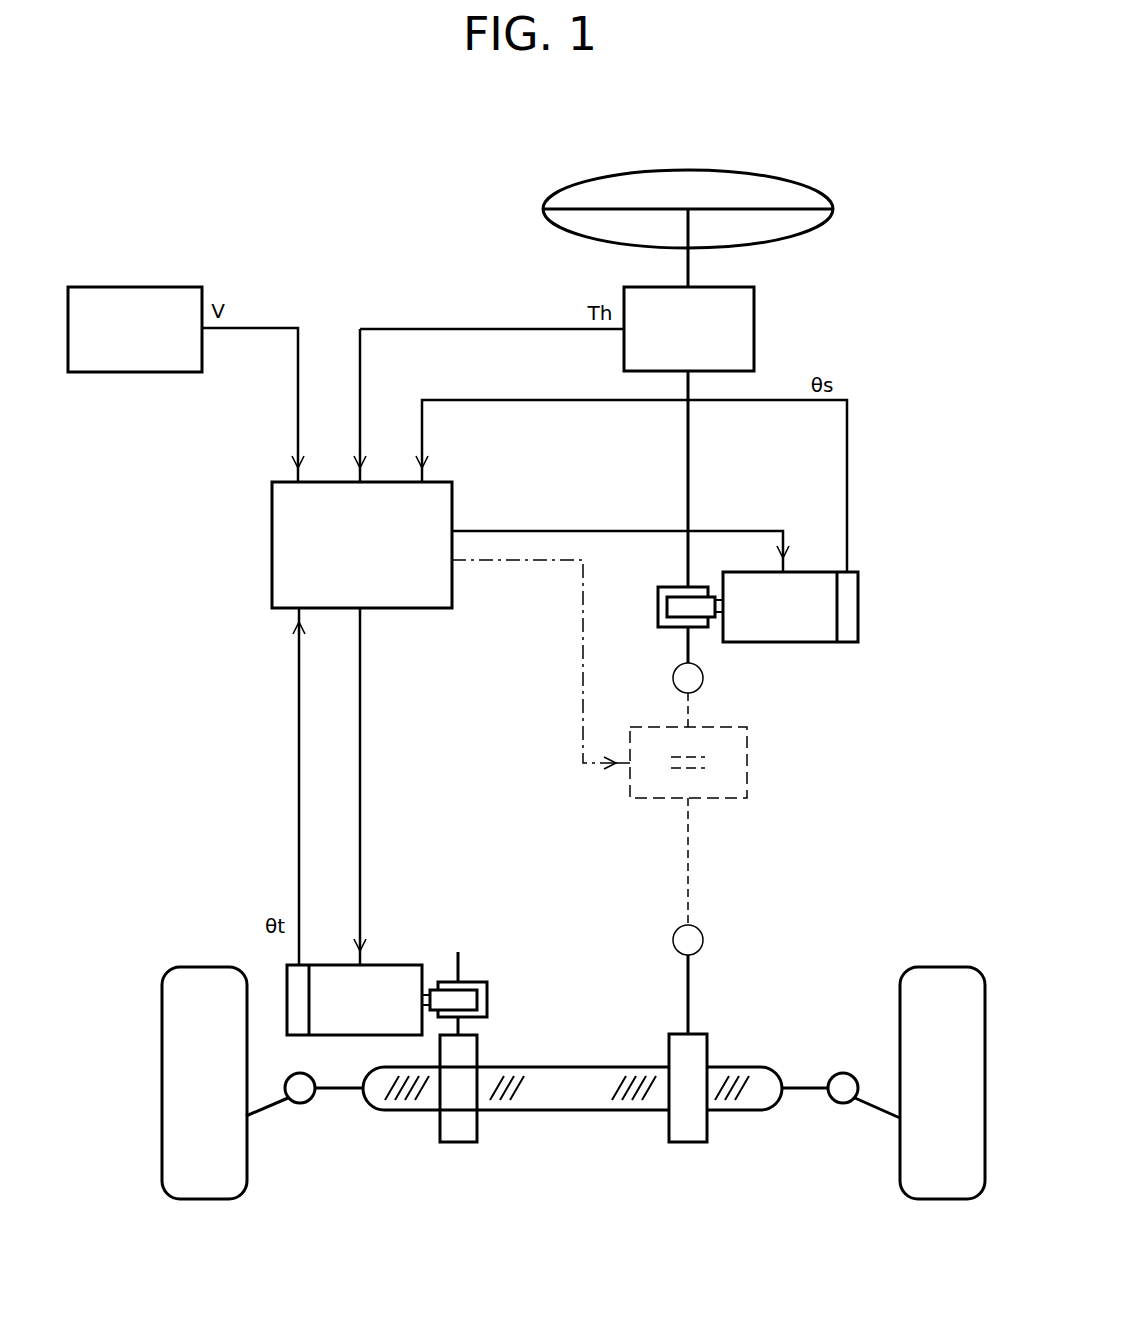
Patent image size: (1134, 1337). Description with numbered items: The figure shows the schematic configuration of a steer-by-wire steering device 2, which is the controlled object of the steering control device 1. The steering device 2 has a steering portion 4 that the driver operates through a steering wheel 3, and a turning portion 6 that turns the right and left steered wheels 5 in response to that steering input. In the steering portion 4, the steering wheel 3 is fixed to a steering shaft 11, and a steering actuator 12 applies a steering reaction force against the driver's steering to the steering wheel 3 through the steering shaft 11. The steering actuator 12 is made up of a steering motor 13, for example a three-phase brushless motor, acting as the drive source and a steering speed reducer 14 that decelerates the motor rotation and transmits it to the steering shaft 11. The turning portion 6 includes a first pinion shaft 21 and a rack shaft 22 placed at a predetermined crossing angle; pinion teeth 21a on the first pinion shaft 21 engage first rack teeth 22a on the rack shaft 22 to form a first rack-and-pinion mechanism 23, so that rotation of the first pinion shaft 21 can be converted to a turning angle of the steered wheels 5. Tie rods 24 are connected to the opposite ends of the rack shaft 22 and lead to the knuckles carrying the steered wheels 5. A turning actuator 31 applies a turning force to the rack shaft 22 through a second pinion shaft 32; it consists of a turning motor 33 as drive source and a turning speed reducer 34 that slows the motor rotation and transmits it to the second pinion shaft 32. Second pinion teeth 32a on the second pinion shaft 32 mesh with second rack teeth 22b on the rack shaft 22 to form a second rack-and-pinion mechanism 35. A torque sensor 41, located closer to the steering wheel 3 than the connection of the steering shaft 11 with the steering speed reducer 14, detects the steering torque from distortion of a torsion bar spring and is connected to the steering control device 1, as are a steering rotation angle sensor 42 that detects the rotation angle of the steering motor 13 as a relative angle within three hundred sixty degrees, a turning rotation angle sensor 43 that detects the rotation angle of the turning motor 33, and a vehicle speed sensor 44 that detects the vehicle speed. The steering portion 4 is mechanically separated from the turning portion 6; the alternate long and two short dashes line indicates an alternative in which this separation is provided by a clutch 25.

The steering control device 1 is at (438, 610).
The steering device 2 is at (853, 172).
The steering wheel 3 is at (775, 172).
The steering portion 4 is at (880, 516).
The steered wheels 5 is at (247, 1165).
The turning portion 6 is at (828, 946).
The steering shaft 11 is at (691, 262).
The steering actuator 12 is at (756, 680).
The steering motor 13 is at (818, 642).
The steering speed reducer 14 is at (656, 604).
The first pinion shaft 21 is at (686, 999).
The pinion teeth 21a is at (690, 1145).
The rack shaft 22 is at (572, 1122).
The first rack teeth 22a is at (645, 1110).
The second rack teeth 22b is at (490, 1110).
The first rack-and-pinion mechanism 23 is at (644, 1166).
The tie rods 24 is at (333, 1090).
The clutch 25 is at (747, 770).
The turning actuator 31 is at (506, 936).
The second pinion shaft 32 is at (462, 966).
The second pinion teeth 32a is at (458, 1145).
The turning motor 33 is at (394, 965).
The turning speed reducer 34 is at (490, 1010).
The second rack-and-pinion mechanism 35 is at (434, 1118).
The torque sensor 41 is at (754, 325).
The steering rotation angle sensor 42 is at (846, 642).
The turning rotation angle sensor 43 is at (287, 1020).
The vehicle speed sensor 44 is at (132, 287).